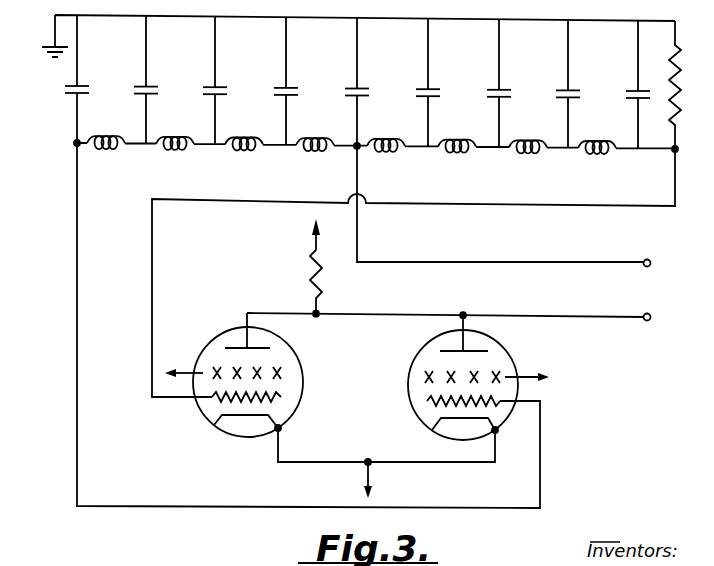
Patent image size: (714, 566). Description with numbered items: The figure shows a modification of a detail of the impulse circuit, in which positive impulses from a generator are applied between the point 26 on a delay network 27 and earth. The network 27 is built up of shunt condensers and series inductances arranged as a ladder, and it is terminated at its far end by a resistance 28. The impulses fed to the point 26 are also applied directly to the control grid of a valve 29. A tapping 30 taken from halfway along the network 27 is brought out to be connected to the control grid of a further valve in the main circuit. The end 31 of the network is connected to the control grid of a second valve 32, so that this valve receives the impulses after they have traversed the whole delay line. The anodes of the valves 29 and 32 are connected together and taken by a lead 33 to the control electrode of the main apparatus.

The point 26 is at (75, 146).
The delay network 27 is at (494, 140).
The resistance 28 is at (679, 84).
The end of the network 31 is at (678, 149).
The tapping 30 is at (610, 263).
The lead 33 is at (600, 316).
The valve 32 is at (228, 333).
The valve 29 is at (505, 349).